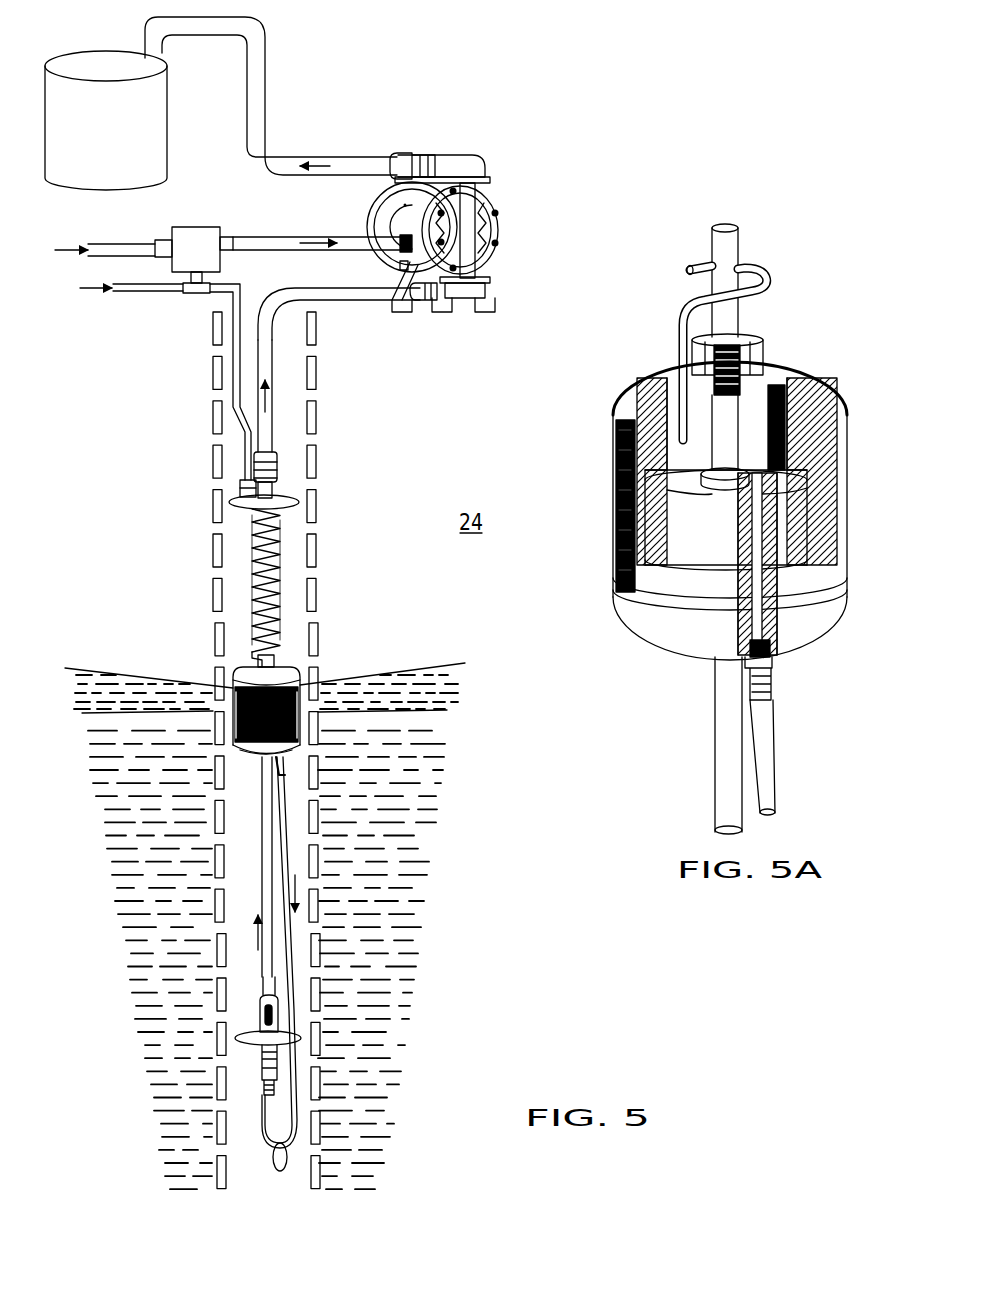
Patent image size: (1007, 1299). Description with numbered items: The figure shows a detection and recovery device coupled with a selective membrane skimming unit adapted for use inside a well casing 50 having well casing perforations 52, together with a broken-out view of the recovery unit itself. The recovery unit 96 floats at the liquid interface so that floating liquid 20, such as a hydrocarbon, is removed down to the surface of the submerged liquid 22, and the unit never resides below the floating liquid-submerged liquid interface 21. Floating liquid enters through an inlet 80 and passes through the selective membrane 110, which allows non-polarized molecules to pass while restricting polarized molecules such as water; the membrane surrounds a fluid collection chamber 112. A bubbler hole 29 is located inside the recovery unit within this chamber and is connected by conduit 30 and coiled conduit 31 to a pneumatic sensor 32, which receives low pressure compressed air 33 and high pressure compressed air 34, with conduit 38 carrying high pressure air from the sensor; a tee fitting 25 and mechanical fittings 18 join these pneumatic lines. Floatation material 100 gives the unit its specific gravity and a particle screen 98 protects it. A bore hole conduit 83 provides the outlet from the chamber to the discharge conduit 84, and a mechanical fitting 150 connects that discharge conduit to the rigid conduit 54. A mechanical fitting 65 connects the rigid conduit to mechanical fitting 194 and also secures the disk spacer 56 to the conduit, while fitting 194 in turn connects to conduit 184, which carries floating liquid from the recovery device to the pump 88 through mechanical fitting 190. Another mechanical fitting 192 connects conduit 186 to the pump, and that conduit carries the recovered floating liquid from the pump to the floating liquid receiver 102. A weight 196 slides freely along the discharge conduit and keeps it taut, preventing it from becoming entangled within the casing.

In FIG. 5, the mechanical fitting 18 is at (163, 240).
In FIG. 5, the floating liquid 20 is at (470, 679).
In FIG. 5, the floating liquid-submerged liquid interface 21 is at (440, 713).
In FIG. 5, the submerged liquid 22 is at (430, 897).
In FIG. 5, the tee fitting 25 is at (195, 294).
In FIG. 5A, the bubbler hole 29 is at (700, 490).
In FIG. 5, the conduit 30 is at (235, 394).
In FIG. 5, the conduit 31 is at (252, 568).
In FIG. 5A, the conduit 31 is at (680, 286).
In FIG. 5, the pneumatic sensor 32 is at (197, 227).
In FIG. 5, the compressed air (low pressure) 33 is at (113, 287).
In FIG. 5, the compressed air (high pressure) 34 is at (86, 250).
In FIG. 5, the conduit for carrying high pressure air from sensor 38 is at (338, 237).
In FIG. 5, the well casing 50 is at (320, 543).
In FIG. 5, the well casing perforations 52 is at (320, 608).
In FIG. 5, the rigid conduit 54 is at (258, 863).
In FIG. 5A, the rigid conduit 54 is at (715, 736).
In FIG. 5, the disk spacer 56 is at (288, 492).
In FIG. 5, the mechanical fitting 65 is at (278, 465).
In FIG. 5A, the inlet for recovering floating liquid 80 is at (845, 488).
In FIG. 5A, the conduit 83 is at (800, 590).
In FIG. 5, the discharge conduit 84 is at (298, 1100).
In FIG. 5A, the discharge conduit 84 is at (778, 761).
In FIG. 5, the pump device 88 is at (485, 161).
In FIG. 5, the selective membrane recovery unit adapted for well casing 96 is at (310, 667).
In FIG. 5A, the selective membrane recovery unit adapted for well casing 96 is at (824, 364).
In FIG. 5, the particle screen 98 is at (236, 699).
In FIG. 5A, the particle screen 98 is at (624, 456).
In FIG. 5A, the floatation material 100 is at (830, 540).
In FIG. 5, the floating liquid receiver 102 is at (112, 48).
In FIG. 5A, the selective membrane 110 is at (845, 440).
In FIG. 5A, the chamber formed by selective screen 112 is at (767, 345).
In FIG. 5, the mechanical fitting 150 is at (285, 768).
In FIG. 5A, the mechanical fitting 150 is at (778, 684).
In FIG. 5, the conduit 184 is at (318, 297).
In FIG. 5, the conduit 186 is at (285, 60).
In FIG. 5, the mechanical fitting 190 is at (420, 305).
In FIG. 5, the mechanical fitting 192 is at (397, 152).
In FIG. 5, the mechanical fitting 194 is at (280, 450).
In FIG. 5, the weight 196 is at (290, 1156).